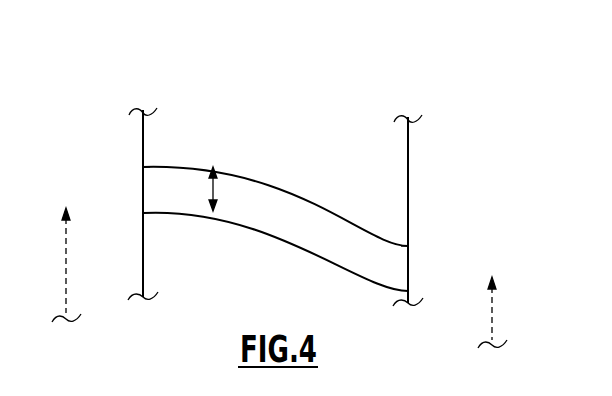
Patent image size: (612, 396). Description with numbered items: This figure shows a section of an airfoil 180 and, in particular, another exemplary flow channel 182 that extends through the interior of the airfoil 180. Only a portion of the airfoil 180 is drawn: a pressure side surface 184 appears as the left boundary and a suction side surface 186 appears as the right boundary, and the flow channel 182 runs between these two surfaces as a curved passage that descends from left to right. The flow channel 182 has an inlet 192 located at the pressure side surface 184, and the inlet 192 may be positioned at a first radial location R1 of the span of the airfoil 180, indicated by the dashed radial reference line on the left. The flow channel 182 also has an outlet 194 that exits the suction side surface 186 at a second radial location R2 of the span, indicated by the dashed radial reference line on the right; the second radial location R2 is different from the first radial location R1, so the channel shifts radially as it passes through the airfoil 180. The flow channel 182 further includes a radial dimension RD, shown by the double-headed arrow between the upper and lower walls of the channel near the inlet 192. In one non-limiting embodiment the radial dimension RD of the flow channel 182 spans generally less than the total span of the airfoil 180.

The airfoil 180 is at (243, 117).
The flow channel 182 is at (277, 198).
The pressure side surface 184 is at (143, 259).
The suction side surface 186 is at (408, 187).
The inlet 192 is at (143, 193).
The outlet 194 is at (408, 272).
The radial dimension RD is at (216, 190).
The first radial location R1 is at (66, 250).
The second radial location R2 is at (492, 318).